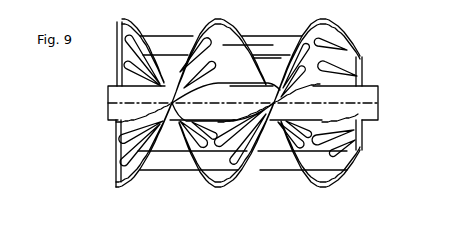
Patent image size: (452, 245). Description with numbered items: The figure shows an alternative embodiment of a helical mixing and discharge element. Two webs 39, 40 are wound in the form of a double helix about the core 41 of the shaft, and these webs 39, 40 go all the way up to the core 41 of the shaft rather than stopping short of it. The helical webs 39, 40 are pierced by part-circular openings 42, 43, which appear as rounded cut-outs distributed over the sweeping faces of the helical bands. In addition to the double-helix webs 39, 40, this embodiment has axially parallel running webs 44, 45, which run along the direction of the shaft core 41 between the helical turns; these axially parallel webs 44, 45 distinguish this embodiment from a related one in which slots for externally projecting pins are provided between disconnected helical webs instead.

The web 39 is at (326, 27).
The web 40 is at (314, 179).
The core of the shaft 41 is at (369, 90).
The part-circular opening 42 is at (338, 47).
The part-circular opening 43 is at (128, 137).
The axially parallel running web 44 is at (167, 47).
The axially parallel running web 45 is at (280, 160).